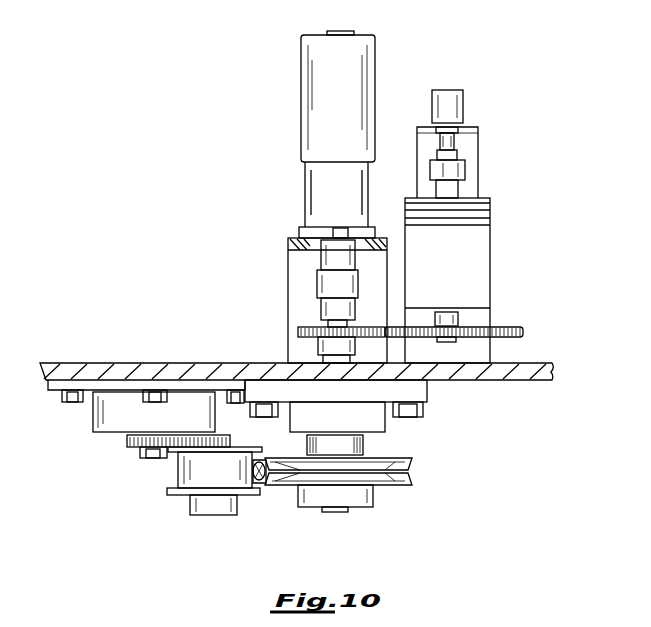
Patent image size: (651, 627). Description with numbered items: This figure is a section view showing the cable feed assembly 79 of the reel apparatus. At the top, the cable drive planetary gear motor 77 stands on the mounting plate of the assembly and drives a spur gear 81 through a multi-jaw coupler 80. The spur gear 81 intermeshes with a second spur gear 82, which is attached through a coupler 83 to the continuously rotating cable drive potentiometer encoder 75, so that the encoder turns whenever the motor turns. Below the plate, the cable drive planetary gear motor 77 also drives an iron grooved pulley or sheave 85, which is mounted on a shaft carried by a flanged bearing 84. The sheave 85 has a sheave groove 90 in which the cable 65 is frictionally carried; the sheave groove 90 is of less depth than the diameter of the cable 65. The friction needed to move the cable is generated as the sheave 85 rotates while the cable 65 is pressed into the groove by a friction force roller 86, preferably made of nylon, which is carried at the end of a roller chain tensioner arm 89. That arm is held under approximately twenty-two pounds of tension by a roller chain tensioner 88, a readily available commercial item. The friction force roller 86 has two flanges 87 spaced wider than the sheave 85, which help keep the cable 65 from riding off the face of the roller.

The cable drive planetary gear motor 77 is at (316, 76).
The cable drive potentiometer encoder 75 is at (455, 88).
The coupler 83 is at (466, 172).
The multi-jaw coupler 80 is at (320, 282).
The spur gear 81 is at (298, 330).
The spur gear 82 is at (522, 327).
The cable feed assembly 79 is at (185, 362).
The flanged bearing 84 is at (430, 392).
The roller chain tensioner 88 is at (92, 418).
The roller chain tensioner arm 89 is at (128, 443).
The friction force roller 86 is at (178, 466).
The flanges 87 is at (190, 500).
The cable 65 is at (262, 485).
The sheave 85 is at (412, 456).
The sheave groove 90 is at (400, 478).